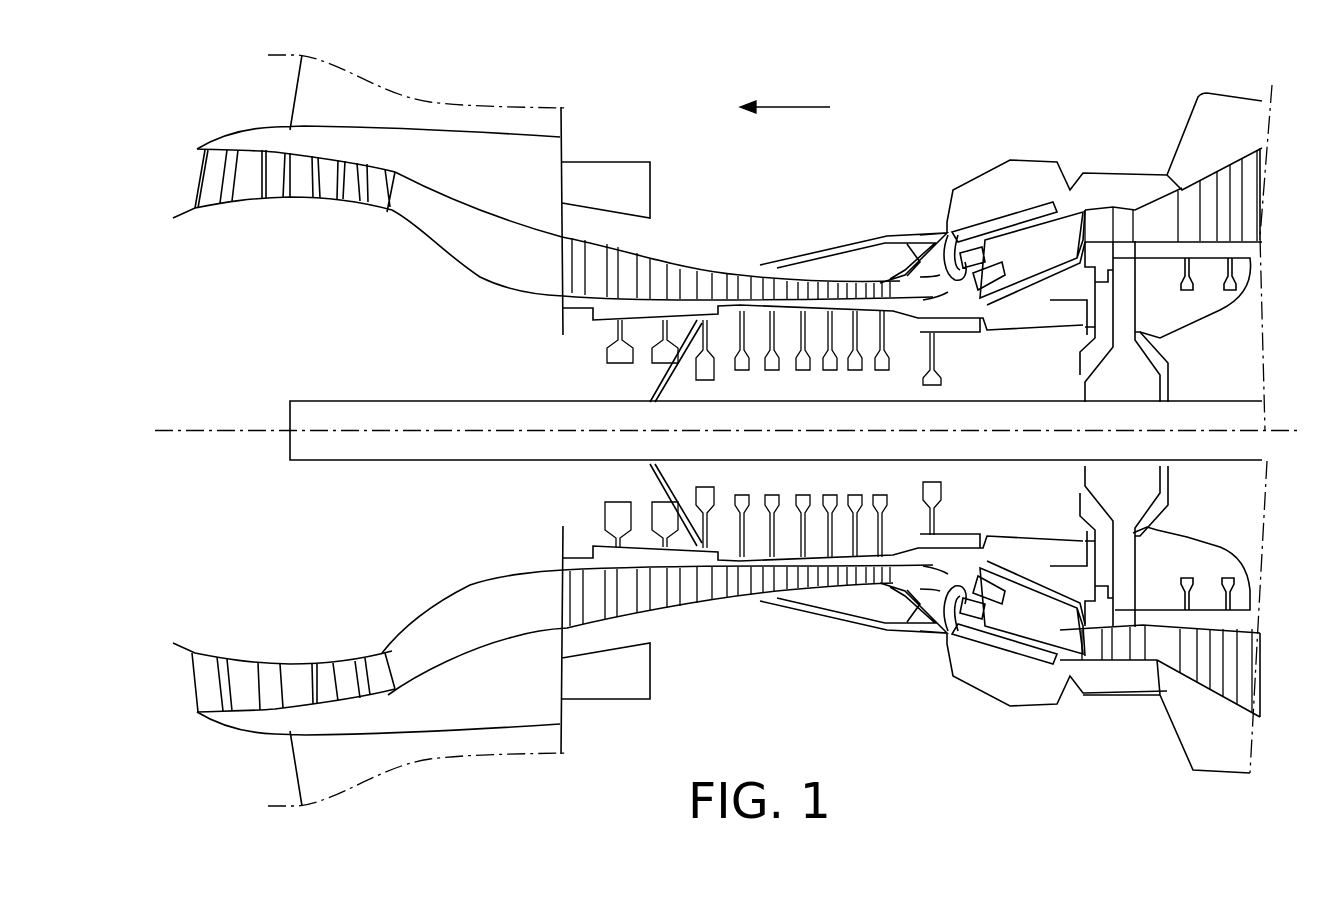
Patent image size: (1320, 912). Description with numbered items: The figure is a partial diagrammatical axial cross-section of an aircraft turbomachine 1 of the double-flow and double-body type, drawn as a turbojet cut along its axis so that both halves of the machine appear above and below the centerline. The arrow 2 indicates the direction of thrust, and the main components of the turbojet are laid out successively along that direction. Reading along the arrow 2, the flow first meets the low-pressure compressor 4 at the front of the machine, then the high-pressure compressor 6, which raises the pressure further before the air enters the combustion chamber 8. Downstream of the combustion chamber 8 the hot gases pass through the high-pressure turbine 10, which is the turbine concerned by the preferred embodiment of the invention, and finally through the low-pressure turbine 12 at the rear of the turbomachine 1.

The aircraft turbomachine 1 is at (945, 150).
The arrow 2 is at (795, 106).
The low-pressure compressor 4 is at (304, 200).
The high-pressure compressor 6 is at (793, 311).
The combustion chamber 8 is at (1031, 262).
The high-pressure turbine 10 is at (1108, 215).
The low-pressure turbine 12 is at (1178, 213).